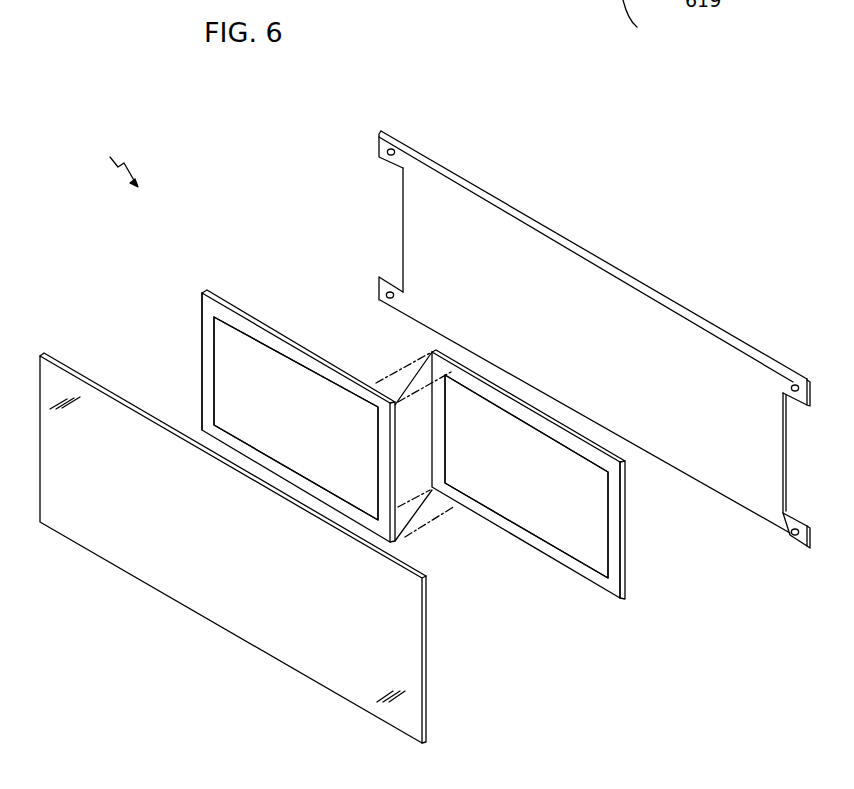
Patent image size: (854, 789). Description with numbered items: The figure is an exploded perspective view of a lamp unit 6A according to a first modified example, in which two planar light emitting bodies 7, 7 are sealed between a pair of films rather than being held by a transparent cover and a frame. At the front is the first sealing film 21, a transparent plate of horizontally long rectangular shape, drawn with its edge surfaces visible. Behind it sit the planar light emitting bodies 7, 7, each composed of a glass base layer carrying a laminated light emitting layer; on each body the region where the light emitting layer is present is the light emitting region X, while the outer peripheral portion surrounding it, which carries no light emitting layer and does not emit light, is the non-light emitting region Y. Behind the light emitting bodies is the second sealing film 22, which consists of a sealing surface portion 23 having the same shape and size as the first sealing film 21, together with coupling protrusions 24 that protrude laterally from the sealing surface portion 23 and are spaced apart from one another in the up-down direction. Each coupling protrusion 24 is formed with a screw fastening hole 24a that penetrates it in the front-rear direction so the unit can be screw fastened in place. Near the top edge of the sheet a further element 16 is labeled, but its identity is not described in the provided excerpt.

The lamp unit 6A is at (125, 154).
The cabinet member 16 is at (645, 23).
The first sealing film 21 is at (197, 603).
The planar light emitting body 7 is at (204, 292).
The light emitting region X is at (250, 350).
The non-light emitting region Y is at (203, 350).
The second sealing film 22 is at (547, 253).
The sealing surface portion 23 is at (613, 293).
The coupling protrusion 24 is at (400, 141).
The screw fastening hole 24a is at (391, 149).